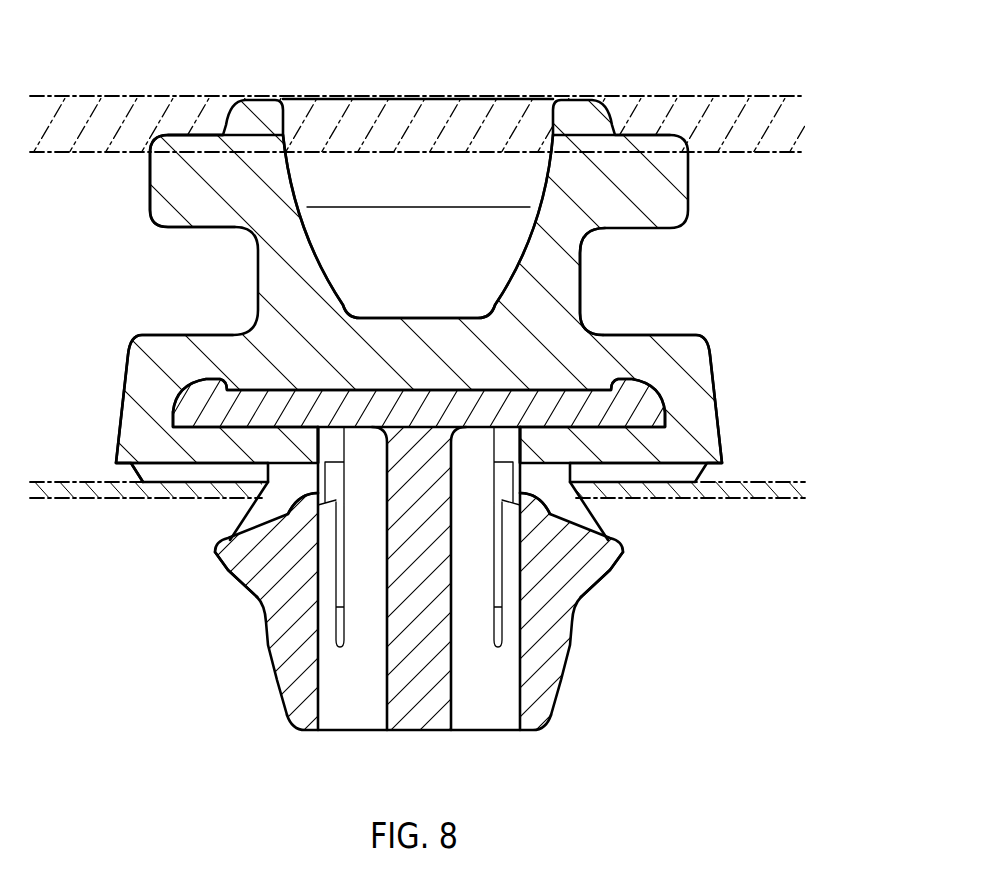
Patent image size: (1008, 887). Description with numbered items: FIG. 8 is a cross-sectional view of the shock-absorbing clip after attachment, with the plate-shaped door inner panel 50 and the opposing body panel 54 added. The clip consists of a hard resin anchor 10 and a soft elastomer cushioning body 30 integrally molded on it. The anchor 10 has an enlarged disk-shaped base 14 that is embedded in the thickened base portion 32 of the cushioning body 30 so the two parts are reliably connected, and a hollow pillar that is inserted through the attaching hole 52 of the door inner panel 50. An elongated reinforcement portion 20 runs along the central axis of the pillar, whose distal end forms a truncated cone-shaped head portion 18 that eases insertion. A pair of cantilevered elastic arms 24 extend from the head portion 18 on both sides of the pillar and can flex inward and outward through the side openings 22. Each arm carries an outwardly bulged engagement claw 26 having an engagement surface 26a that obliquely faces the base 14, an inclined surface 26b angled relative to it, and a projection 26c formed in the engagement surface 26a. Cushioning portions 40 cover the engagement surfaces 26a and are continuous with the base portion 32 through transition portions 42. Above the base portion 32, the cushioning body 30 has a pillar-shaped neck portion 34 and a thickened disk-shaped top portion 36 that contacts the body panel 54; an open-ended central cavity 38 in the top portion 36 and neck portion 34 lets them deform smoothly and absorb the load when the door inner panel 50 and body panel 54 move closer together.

The anchor 10 is at (466, 525).
The base 14 is at (283, 413).
The head portion 18 is at (562, 690).
The reinforcement portion 20 is at (392, 650).
The side openings 22 is at (329, 573).
The elastic arms 24 is at (297, 622).
The engagement claws 26 is at (417, 545).
The engagement surfaces 26a is at (235, 527).
The inclined surfaces 26b is at (668, 582).
The projections 26c is at (268, 481).
The cushioning body 30 is at (712, 203).
The base portion 32 is at (690, 358).
The neck portion 34 is at (558, 272).
The top portion 36 is at (173, 182).
The cavity 38 is at (450, 185).
The cushioning portions 40 is at (247, 514).
The transition portions 42 is at (283, 467).
The door inner panel 50 is at (767, 492).
The attaching hole 52 is at (131, 463).
The body panel 54 is at (670, 108).